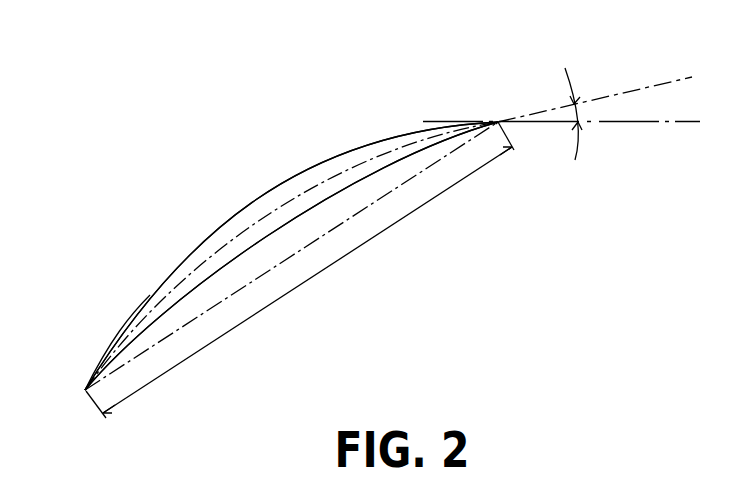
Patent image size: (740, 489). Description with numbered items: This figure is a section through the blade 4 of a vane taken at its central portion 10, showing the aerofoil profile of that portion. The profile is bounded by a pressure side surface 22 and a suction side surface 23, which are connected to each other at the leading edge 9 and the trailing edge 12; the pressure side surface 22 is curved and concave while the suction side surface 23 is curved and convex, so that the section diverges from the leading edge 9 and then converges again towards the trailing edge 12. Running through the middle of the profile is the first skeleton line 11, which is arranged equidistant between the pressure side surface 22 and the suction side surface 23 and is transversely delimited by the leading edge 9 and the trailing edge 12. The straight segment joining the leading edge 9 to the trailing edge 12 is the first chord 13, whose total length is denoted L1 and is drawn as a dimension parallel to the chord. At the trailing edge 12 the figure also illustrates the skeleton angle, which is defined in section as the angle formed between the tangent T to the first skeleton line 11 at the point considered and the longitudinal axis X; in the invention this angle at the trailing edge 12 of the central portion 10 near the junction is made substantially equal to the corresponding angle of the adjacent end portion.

The blade 4 is at (178, 233).
The leading edge 9 is at (86, 391).
The central portion 10 is at (284, 199).
The first skeleton line 11 is at (173, 288).
The trailing edge 12 is at (499, 120).
The first chord 13 is at (364, 207).
The pressure side surface 22 is at (205, 285).
The suction side surface 23 is at (144, 305).
The total length of the first chord L1 is at (322, 270).
The longitudinal axis X is at (620, 123).
The tangent to the skeleton line T is at (667, 83).